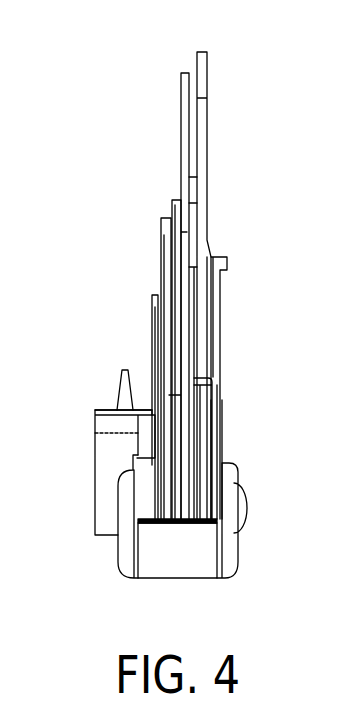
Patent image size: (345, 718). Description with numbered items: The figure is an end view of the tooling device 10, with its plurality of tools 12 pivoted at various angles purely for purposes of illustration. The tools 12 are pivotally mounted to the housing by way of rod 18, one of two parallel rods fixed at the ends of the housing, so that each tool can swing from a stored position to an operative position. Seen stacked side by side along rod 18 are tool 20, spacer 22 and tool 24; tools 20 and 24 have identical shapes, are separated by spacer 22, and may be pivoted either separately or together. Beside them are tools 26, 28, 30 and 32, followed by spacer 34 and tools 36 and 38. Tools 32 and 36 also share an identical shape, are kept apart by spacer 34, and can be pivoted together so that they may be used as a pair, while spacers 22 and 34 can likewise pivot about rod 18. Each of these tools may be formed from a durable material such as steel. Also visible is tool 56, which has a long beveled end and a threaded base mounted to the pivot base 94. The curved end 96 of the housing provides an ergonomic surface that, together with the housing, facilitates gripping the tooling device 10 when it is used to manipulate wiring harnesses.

The tooling device 10 is at (92, 111).
The tools 12 is at (247, 201).
The rod 18 is at (239, 508).
The tool 20 is at (135, 482).
The spacer 22 is at (150, 425).
The tool 24 is at (157, 372).
The tool 26 is at (162, 338).
The tool 28 is at (172, 492).
The tool 30 is at (187, 310).
The tool 32 is at (191, 353).
The spacer 34 is at (201, 402).
The tool 36 is at (213, 455).
The tool 38 is at (221, 440).
The tool 56 is at (119, 400).
The pivot base 94 is at (103, 455).
The curved end 96 is at (200, 548).